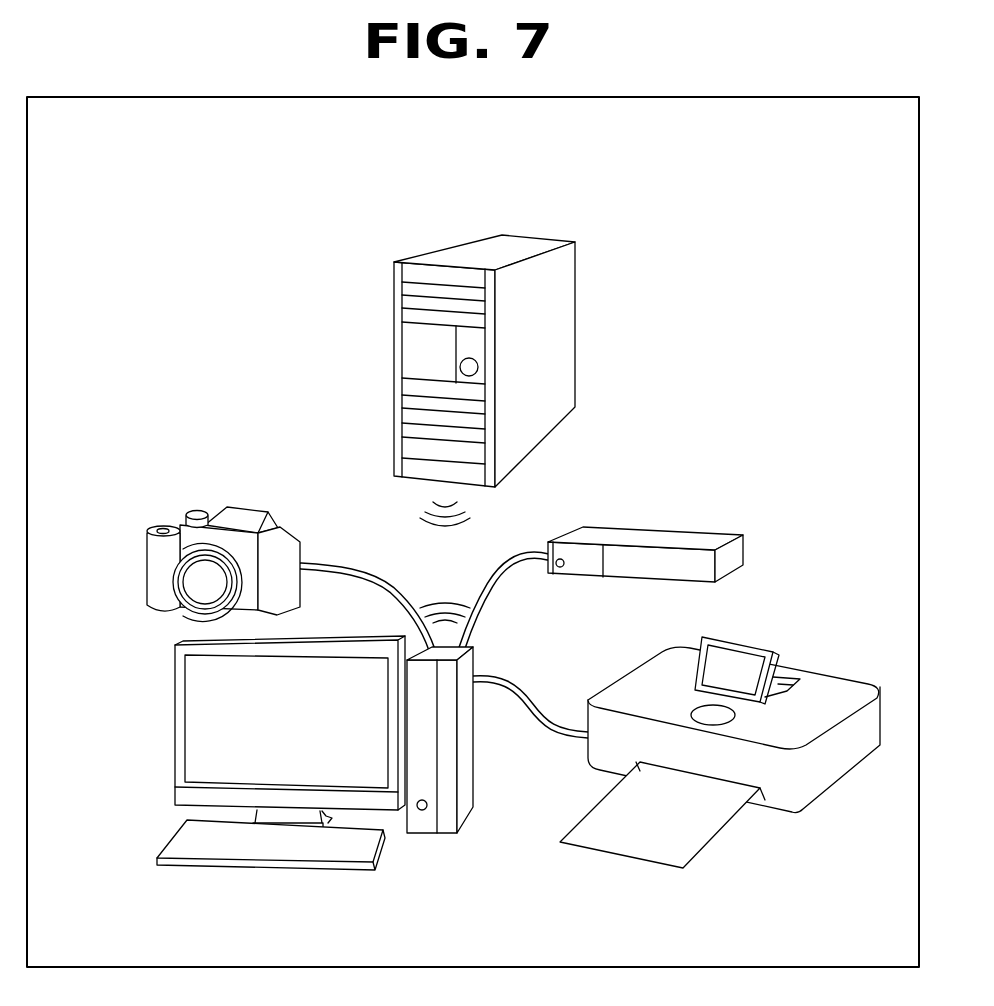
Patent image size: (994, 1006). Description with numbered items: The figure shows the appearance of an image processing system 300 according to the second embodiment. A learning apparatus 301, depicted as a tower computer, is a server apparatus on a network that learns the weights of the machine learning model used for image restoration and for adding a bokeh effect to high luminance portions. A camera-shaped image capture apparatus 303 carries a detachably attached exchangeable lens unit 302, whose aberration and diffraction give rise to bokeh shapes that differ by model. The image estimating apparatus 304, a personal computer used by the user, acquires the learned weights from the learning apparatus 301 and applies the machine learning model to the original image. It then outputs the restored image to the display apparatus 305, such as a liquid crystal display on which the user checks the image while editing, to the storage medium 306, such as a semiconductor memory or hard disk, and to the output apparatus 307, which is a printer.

The image processing system 300 is at (183, 238).
The learning apparatus 301 is at (393, 285).
The lens unit 302 is at (203, 590).
The image capture apparatus 303 is at (148, 548).
The image estimating apparatus 304 is at (435, 835).
The display apparatus 305 is at (175, 703).
The storage medium 306 is at (743, 551).
The output apparatus 307 is at (845, 672).